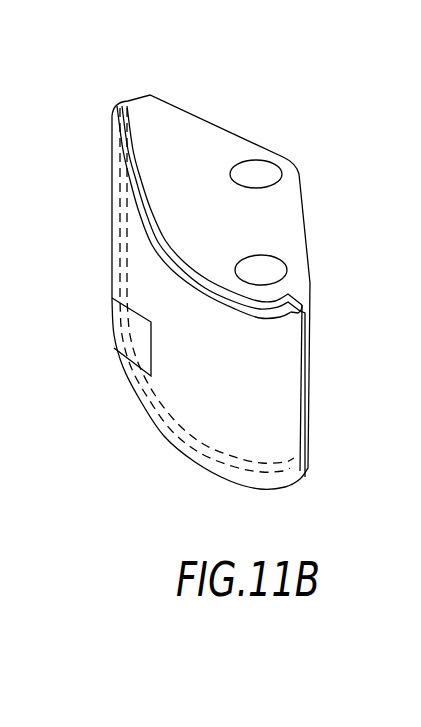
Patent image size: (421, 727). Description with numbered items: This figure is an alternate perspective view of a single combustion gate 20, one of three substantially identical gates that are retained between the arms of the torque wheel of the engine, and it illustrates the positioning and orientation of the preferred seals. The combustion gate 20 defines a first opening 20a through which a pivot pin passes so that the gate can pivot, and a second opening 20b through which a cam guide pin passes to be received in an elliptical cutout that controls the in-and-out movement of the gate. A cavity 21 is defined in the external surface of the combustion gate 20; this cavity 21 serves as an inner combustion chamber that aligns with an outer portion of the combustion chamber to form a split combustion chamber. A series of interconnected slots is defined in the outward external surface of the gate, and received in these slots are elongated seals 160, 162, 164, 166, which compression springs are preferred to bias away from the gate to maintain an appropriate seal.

The combustion gate 20 is at (196, 128).
The first opening 20a is at (272, 268).
The second opening 20b is at (265, 170).
The elongated seal 160 is at (119, 114).
The elongated seal 162 is at (170, 440).
The elongated seal 164 is at (115, 241).
The elongated seal 166 is at (308, 408).
The cavity 21 is at (140, 337).